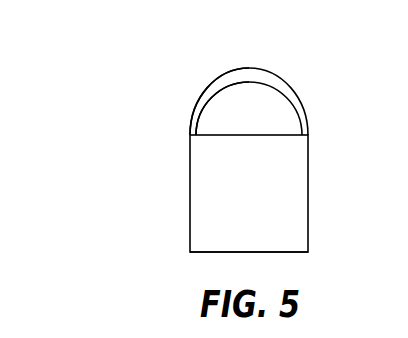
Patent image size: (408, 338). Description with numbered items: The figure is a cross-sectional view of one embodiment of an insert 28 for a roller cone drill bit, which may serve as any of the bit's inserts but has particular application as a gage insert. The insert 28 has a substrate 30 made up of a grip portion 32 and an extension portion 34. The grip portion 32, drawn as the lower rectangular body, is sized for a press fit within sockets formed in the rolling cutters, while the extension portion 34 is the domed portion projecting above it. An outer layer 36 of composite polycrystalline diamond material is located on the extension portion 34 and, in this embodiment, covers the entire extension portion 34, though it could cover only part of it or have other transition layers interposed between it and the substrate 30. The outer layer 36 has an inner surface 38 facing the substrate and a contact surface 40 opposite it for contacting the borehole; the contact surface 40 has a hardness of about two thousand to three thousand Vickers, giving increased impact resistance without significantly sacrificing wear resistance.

The insert 28 is at (208, 135).
The substrate 30 is at (308, 188).
The grip portion 32 is at (303, 243).
The extension portion 34 is at (287, 115).
The outer layer 36 is at (273, 80).
The inner surface 38 is at (208, 102).
The contact surface 40 is at (221, 77).